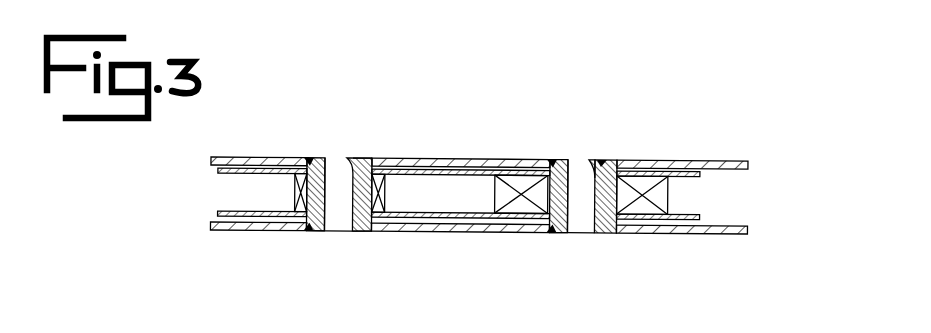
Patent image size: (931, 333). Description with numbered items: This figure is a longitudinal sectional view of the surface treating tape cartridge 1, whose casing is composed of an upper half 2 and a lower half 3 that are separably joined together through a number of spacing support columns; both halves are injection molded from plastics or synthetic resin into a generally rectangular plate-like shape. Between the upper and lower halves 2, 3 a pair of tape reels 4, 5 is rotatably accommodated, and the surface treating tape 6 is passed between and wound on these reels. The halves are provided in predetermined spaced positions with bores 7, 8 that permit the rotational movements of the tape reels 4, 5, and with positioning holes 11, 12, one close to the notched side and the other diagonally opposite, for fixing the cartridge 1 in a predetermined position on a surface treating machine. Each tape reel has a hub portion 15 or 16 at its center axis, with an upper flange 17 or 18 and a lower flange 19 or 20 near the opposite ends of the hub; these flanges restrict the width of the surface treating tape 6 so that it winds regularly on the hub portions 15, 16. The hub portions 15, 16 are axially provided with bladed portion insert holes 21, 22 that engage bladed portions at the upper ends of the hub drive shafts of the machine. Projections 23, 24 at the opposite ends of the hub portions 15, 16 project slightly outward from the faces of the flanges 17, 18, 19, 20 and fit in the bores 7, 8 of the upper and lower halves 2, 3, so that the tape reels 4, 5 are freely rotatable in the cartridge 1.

The surface treating tape cartridge 1 is at (482, 184).
The upper half 2 is at (490, 134).
The lower half 3 is at (486, 259).
The tape reel 4 is at (353, 230).
The tape reel 5 is at (592, 230).
The surface treating tape 6 is at (297, 230).
The bore 7 is at (313, 157).
The bore 8 is at (318, 230).
The positioning hole 11 is at (243, 157).
The positioning hole 12 is at (240, 230).
The hub portion 15 is at (338, 158).
The hub portion 16 is at (572, 158).
The upper flange 17 is at (218, 170).
The upper flange 18 is at (700, 171).
The lower flange 19 is at (218, 212).
The lower flange 20 is at (700, 214).
The bladed portion insert hole 21 is at (349, 160).
The bladed portion insert hole 22 is at (589, 160).
The projection 23 is at (362, 158).
The projection 24 is at (601, 158).